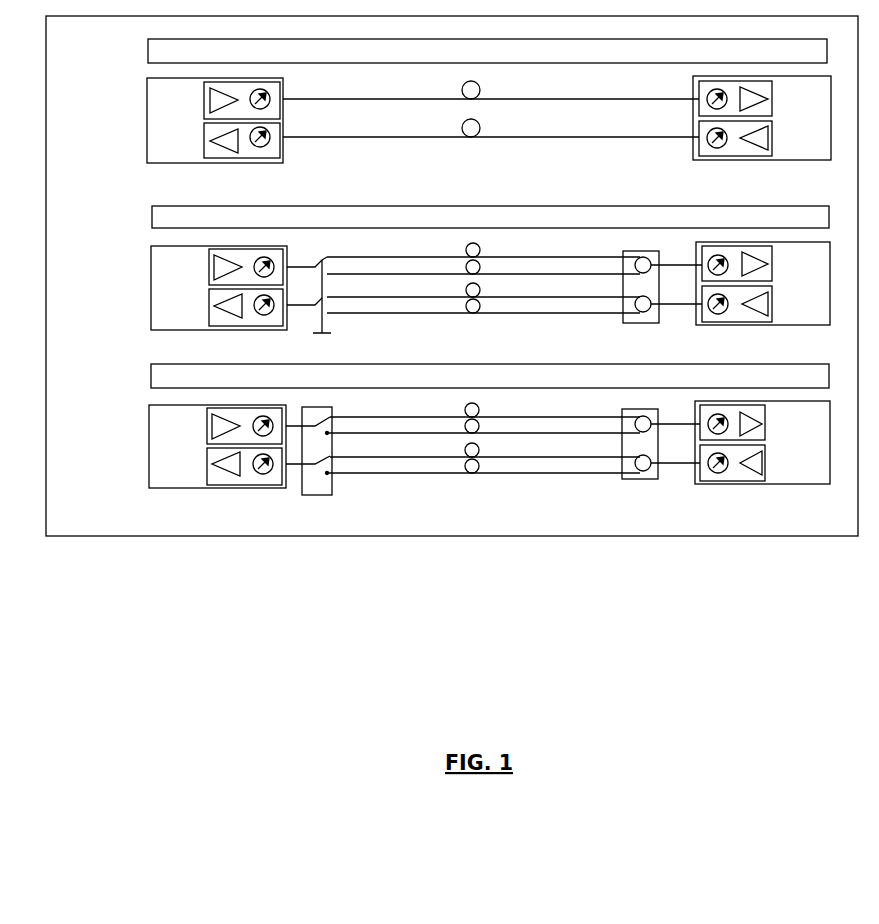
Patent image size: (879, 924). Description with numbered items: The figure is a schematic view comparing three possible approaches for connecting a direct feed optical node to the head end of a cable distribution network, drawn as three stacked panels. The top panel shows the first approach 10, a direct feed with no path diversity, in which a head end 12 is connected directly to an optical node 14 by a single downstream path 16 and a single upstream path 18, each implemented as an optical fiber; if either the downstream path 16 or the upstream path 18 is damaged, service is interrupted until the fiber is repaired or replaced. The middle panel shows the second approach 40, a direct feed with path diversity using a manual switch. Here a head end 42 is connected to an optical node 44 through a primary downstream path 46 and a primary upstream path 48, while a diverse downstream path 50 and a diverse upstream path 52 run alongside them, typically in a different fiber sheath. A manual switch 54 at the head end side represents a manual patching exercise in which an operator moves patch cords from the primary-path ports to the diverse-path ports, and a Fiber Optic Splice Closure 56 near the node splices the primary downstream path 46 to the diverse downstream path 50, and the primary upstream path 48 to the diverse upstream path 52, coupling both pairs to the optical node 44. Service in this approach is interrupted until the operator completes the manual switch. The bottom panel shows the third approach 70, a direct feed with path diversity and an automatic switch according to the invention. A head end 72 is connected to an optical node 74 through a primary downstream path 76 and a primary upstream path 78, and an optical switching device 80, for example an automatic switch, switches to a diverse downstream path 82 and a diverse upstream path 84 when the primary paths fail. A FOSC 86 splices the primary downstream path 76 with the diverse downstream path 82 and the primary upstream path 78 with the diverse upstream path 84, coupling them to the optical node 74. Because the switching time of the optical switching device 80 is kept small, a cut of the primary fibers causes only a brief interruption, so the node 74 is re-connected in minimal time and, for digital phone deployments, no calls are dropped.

The first approach 10 is at (116, 115).
The head end 12 is at (232, 163).
The optical node 14 is at (712, 160).
The downstream path 16 is at (316, 99).
The upstream path 18 is at (336, 137).
The second approach 40 is at (122, 290).
The head end 42 is at (233, 330).
The optical node 44 is at (722, 325).
The primary downstream path 46 is at (365, 257).
The primary upstream path 48 is at (374, 297).
The diverse downstream path 50 is at (373, 274).
The diverse upstream path 52 is at (350, 313).
The manual switch 54 is at (325, 335).
The Fiber Optic Splice Closure (FOSC) 56 is at (640, 323).
The third approach 70 is at (122, 432).
The head end 72 is at (222, 488).
The optical node 74 is at (740, 484).
The primary downstream path 76 is at (403, 416).
The primary upstream path 78 is at (377, 456).
The optical switching device 80 is at (315, 495).
The diverse downstream path 82 is at (390, 433).
The diverse upstream path 84 is at (390, 473).
The FOSC 86 is at (640, 479).